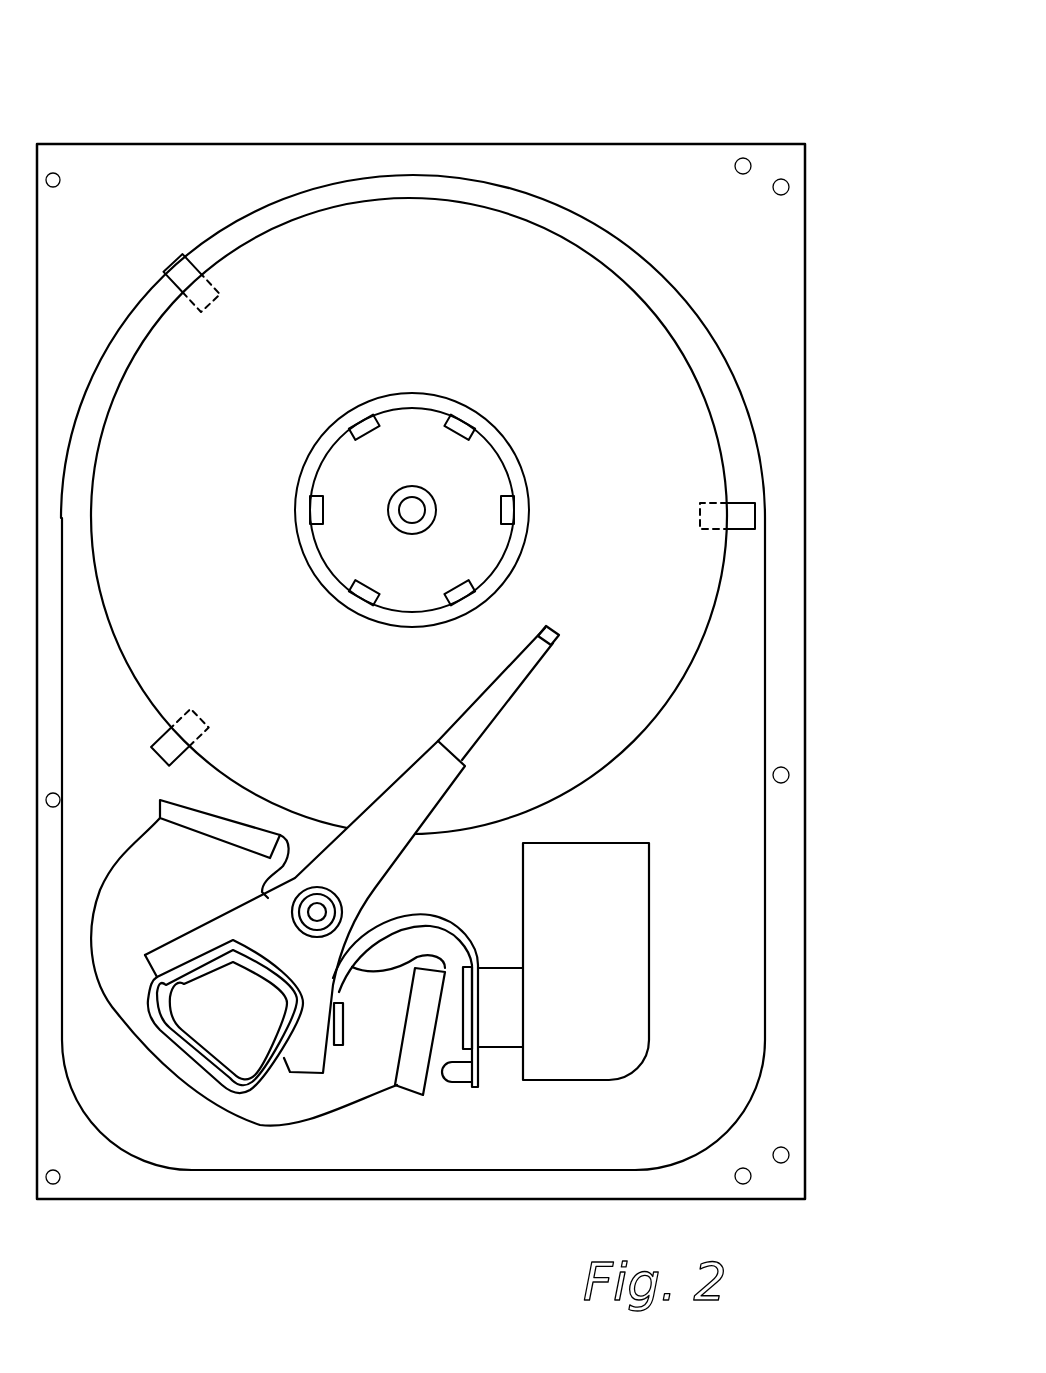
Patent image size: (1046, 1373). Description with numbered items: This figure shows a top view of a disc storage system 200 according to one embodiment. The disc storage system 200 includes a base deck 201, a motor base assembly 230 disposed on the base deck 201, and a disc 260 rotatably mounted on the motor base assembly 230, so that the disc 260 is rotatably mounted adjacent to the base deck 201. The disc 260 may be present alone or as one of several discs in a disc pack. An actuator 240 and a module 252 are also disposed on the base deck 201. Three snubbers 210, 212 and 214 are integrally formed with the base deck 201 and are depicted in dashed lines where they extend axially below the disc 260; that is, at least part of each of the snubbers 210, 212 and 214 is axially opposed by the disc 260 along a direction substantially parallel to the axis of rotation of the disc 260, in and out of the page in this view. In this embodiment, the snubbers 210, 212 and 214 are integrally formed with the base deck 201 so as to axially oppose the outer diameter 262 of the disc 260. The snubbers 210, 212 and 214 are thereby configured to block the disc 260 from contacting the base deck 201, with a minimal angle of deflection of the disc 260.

The disc storage system 200 is at (222, 120).
The base deck 201 is at (806, 246).
The snubber 210 is at (767, 510).
The snubber 212 is at (212, 300).
The snubber 214 is at (204, 716).
The motor base assembly 230 is at (445, 474).
The actuator 240 is at (182, 940).
The module 252 is at (573, 850).
The disc 260 is at (728, 463).
The outer diameter 262 is at (731, 585).